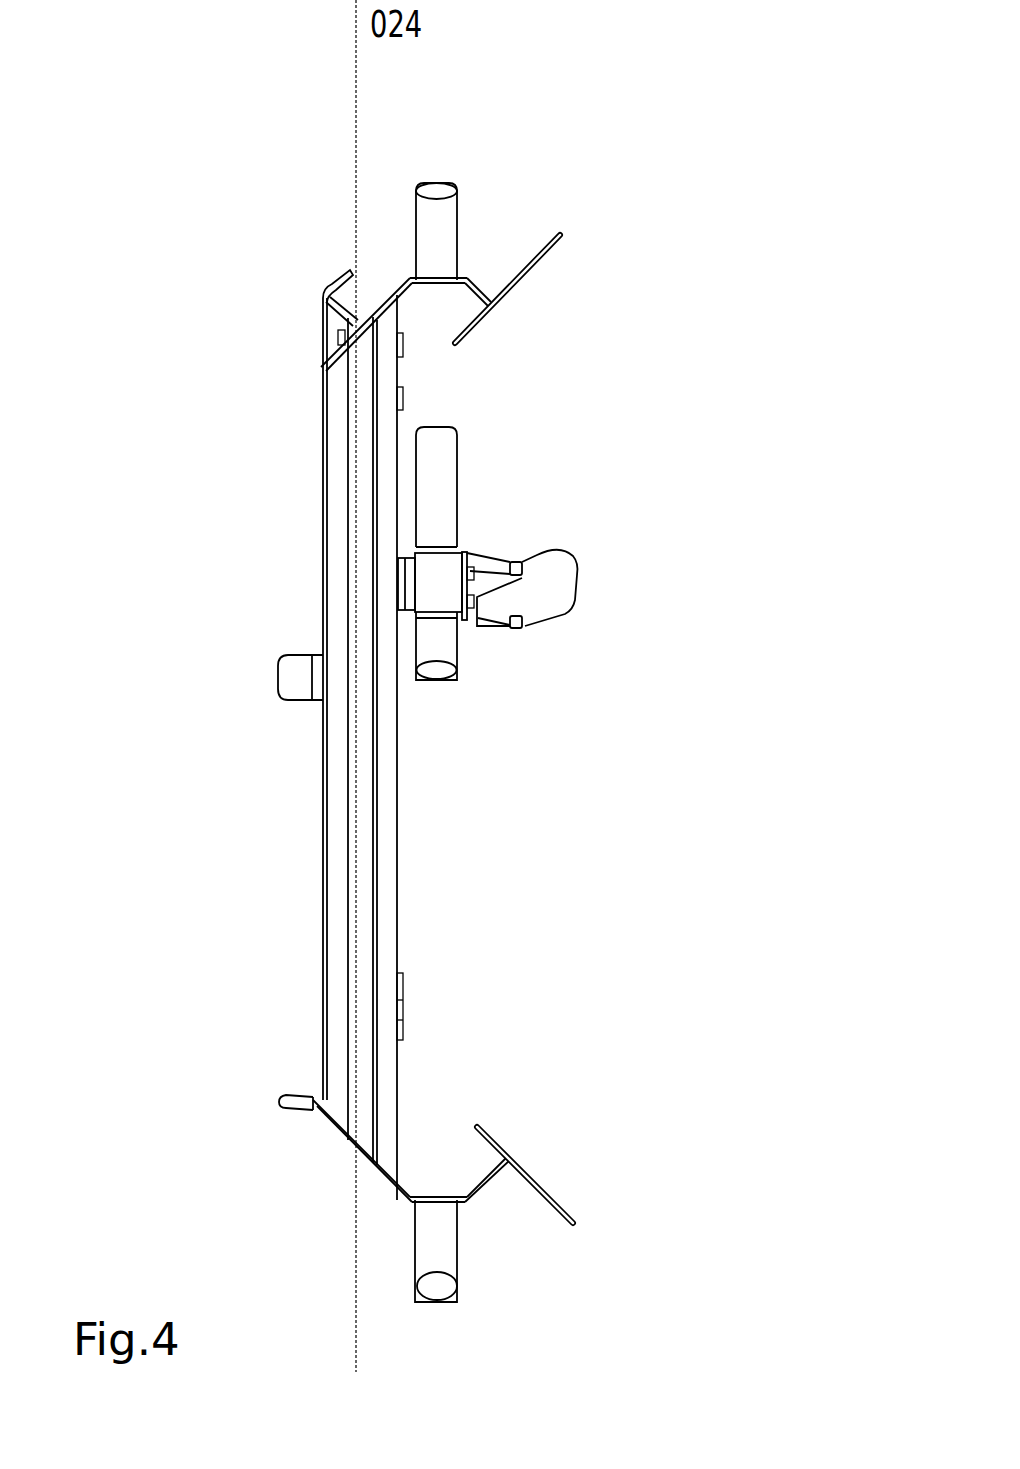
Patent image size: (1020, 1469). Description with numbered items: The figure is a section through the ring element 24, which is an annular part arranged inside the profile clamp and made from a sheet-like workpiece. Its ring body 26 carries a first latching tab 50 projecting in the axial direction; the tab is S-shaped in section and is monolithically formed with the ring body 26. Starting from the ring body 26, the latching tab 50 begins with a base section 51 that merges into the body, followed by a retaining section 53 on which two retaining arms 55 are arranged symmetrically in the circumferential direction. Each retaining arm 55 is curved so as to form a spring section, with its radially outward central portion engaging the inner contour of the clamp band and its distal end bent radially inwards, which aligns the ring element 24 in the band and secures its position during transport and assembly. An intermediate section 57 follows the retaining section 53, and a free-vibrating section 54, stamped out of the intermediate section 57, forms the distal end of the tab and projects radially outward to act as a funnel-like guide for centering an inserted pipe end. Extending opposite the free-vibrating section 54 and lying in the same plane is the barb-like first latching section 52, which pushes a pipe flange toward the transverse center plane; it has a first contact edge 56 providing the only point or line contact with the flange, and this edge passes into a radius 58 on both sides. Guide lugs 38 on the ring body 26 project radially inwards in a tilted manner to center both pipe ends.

The ring element 24 is at (431, 764).
The ring body 26 is at (400, 935).
The guide lug 38 is at (284, 662).
The first latching tab 50 is at (566, 729).
The base section 51 is at (407, 1203).
The first latching section 52 is at (505, 627).
The retaining section 53 is at (432, 1197).
The free-vibrating section 54 is at (575, 603).
The retaining arm 55 is at (433, 682).
The first contact edge 56 is at (462, 620).
The intermediate section 57 is at (492, 1190).
The radius 58 is at (470, 622).